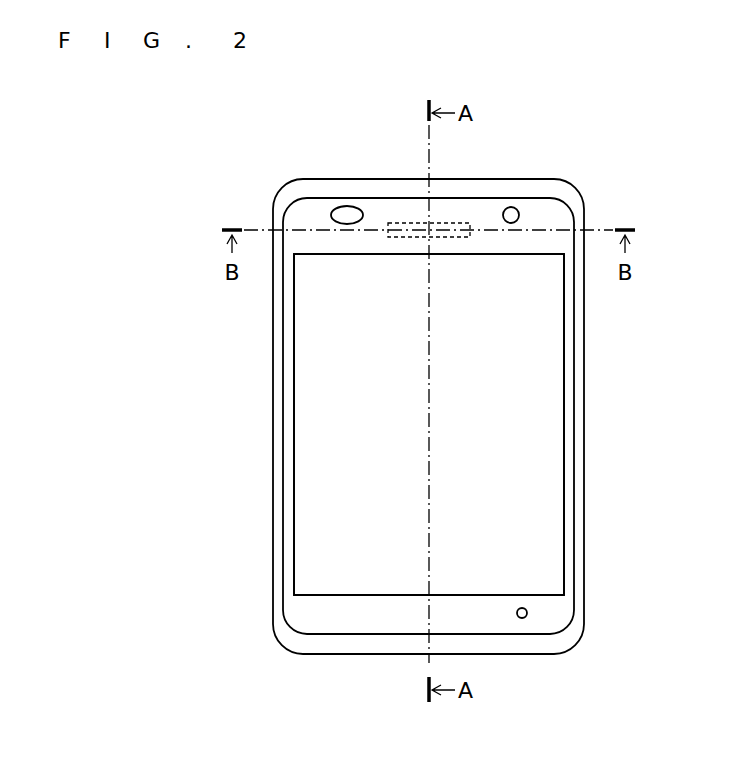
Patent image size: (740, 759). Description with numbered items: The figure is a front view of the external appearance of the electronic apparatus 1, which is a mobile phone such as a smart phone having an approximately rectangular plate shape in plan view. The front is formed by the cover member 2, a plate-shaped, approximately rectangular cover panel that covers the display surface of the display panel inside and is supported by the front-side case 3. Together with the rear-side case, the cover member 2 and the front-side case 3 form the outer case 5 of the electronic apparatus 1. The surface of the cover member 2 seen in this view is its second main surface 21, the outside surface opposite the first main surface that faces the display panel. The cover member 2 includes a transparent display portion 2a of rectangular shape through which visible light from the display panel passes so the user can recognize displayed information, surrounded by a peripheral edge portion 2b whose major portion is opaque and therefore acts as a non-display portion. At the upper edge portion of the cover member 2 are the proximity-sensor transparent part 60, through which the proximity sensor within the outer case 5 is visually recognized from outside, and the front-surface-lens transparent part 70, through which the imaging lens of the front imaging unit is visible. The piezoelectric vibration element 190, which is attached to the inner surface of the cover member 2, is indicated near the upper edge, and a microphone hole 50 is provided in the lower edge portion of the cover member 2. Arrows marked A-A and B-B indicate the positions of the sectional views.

The electronic apparatus 1 is at (491, 158).
The outer case 5 is at (606, 188).
The front-side case 3 is at (565, 641).
The cover member 2 is at (548, 310).
The second main surface 21 is at (545, 397).
The display portion 2a is at (518, 511).
The peripheral edge portion 2b is at (558, 613).
The proximity-sensor transparent part 60 is at (347, 206).
The piezoelectric vibration element 190 is at (404, 223).
The front-surface-lens transparent part 70 is at (517, 208).
The microphone hole 50 is at (522, 619).